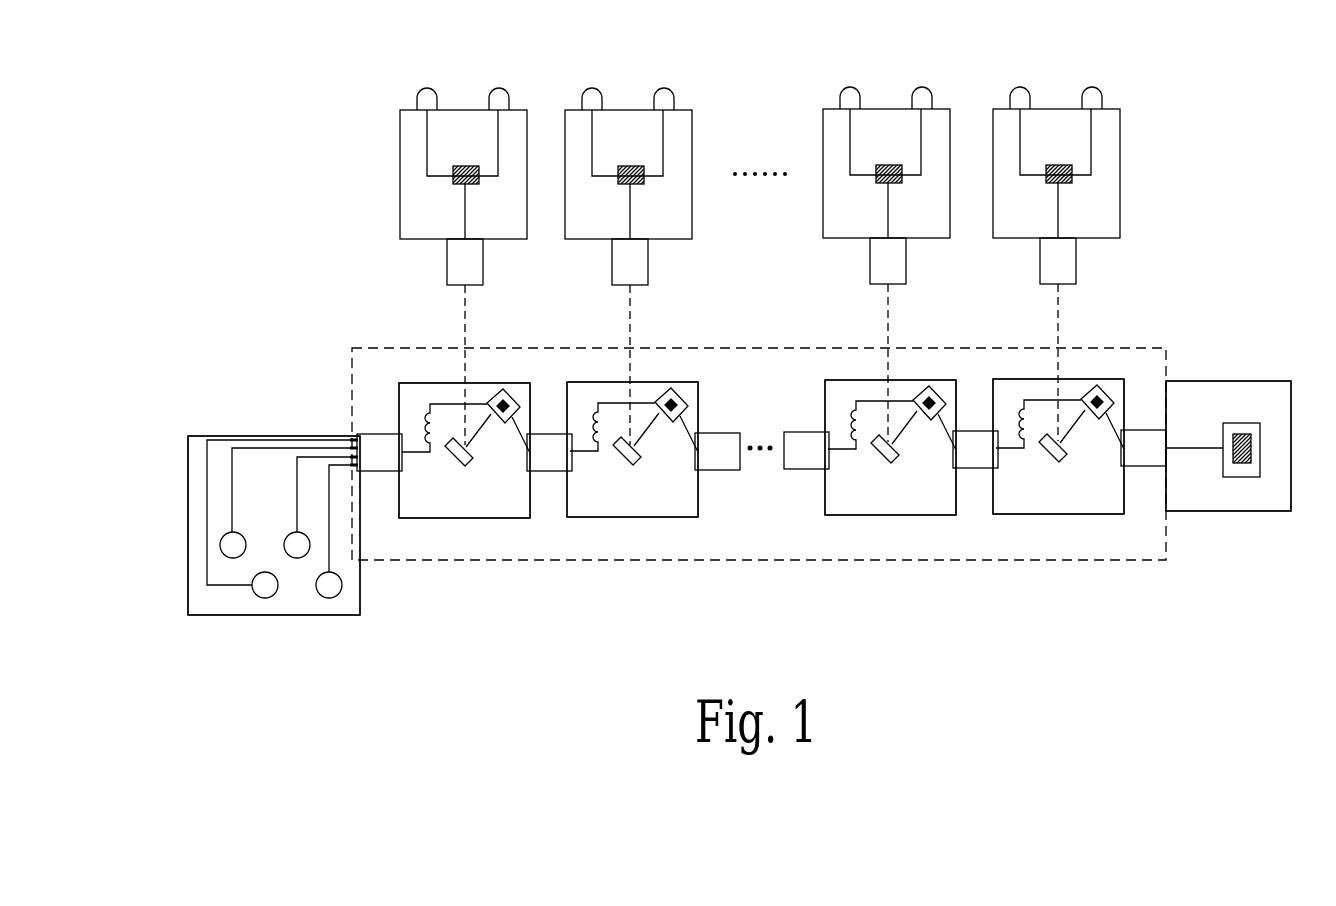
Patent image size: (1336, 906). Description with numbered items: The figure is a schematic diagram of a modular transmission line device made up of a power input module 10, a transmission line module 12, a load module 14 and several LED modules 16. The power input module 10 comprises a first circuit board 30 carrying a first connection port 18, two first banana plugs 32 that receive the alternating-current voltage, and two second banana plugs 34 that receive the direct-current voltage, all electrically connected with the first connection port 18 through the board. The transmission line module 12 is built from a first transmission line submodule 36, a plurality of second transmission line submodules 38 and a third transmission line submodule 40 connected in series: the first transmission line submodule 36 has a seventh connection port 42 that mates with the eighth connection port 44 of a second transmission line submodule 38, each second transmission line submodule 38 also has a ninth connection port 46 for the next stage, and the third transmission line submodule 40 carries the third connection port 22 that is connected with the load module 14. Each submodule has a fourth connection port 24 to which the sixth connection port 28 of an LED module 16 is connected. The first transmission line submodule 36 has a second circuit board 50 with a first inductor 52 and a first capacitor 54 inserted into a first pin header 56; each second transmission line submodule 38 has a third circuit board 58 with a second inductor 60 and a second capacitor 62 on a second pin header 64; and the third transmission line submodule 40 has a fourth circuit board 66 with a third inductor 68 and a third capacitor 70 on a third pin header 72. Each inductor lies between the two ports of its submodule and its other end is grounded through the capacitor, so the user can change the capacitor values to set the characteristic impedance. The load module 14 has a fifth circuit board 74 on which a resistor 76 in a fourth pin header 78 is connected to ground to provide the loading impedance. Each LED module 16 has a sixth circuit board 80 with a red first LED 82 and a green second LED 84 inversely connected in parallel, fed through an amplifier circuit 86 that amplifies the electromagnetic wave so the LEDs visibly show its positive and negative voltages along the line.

The power input module 10 is at (218, 421).
The transmission line module 12 is at (1140, 347).
The load module 14 is at (1233, 524).
The LED module 16 is at (388, 146).
The first connection port 18 is at (370, 445).
The third connection port 22 is at (1142, 466).
The fourth connection port 24 is at (467, 463).
The sixth connection port 28 is at (453, 253).
The first circuit board 30 is at (352, 603).
The first banana plug 32 is at (233, 545).
The second banana plug 34 is at (263, 585).
The first transmission line submodule 36 is at (467, 531).
The second transmission line submodule 38 is at (647, 531).
The third transmission line submodule 40 is at (1079, 527).
The seventh connection port 42 is at (535, 472).
The eighth connection port 44 is at (793, 469).
The ninth connection port 46 is at (715, 471).
The second circuit board 50 is at (428, 507).
The first inductor 52 is at (428, 413).
The first capacitor 54 is at (519, 404).
The first pin header 56 is at (502, 389).
The third circuit board 58 is at (593, 510).
The second inductor 60 is at (596, 412).
The second capacitor 62 is at (688, 403).
The second pin header 64 is at (670, 389).
The fourth circuit board 66 is at (1022, 512).
The third inductor 68 is at (1024, 410).
The third capacitor 70 is at (1107, 399).
The third pin header 72 is at (1096, 387).
The fifth circuit board 74 is at (1195, 507).
The resistor 76 is at (1251, 444).
The fourth pin header 78 is at (1235, 428).
The sixth circuit board 80 is at (517, 127).
The first LED 82 is at (428, 88).
The second LED 84 is at (500, 91).
The amplifier circuit 86 is at (452, 178).